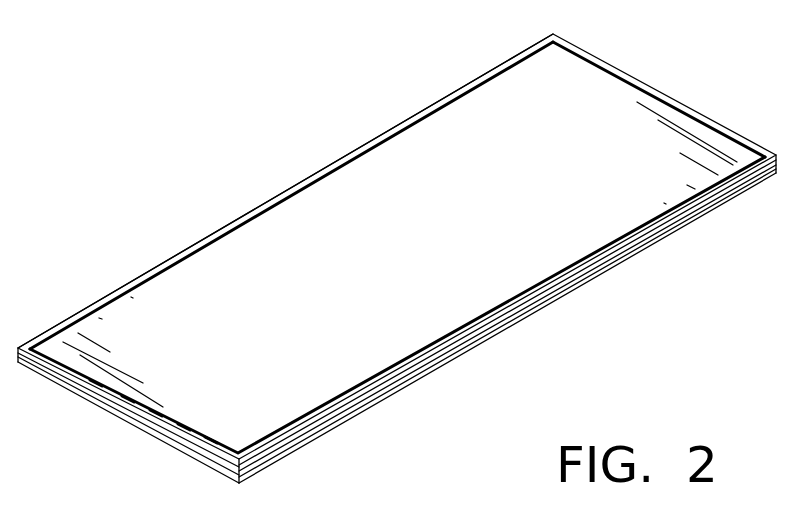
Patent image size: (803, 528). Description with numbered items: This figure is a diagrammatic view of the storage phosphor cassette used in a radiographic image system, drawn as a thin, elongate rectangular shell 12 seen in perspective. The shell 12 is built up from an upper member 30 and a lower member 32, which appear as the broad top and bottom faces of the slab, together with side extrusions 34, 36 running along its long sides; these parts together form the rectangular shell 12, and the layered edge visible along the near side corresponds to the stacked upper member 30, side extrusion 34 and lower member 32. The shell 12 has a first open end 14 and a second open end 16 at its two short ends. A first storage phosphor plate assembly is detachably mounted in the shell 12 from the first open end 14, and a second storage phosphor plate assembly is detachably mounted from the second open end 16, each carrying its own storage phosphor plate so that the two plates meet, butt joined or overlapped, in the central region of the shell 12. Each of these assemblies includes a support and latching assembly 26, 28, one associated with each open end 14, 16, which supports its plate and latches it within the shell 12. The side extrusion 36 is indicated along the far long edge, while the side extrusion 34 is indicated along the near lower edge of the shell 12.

The shell 12 is at (474, 97).
The first open end 14 is at (200, 438).
The second open end 16 is at (602, 70).
The support and latching assembly 26 is at (96, 428).
The support and latching assembly 28 is at (668, 91).
The upper member 30 is at (355, 172).
The lower member 32 is at (352, 421).
The side extrusion 34 is at (507, 326).
The side extrusion 36 is at (227, 223).